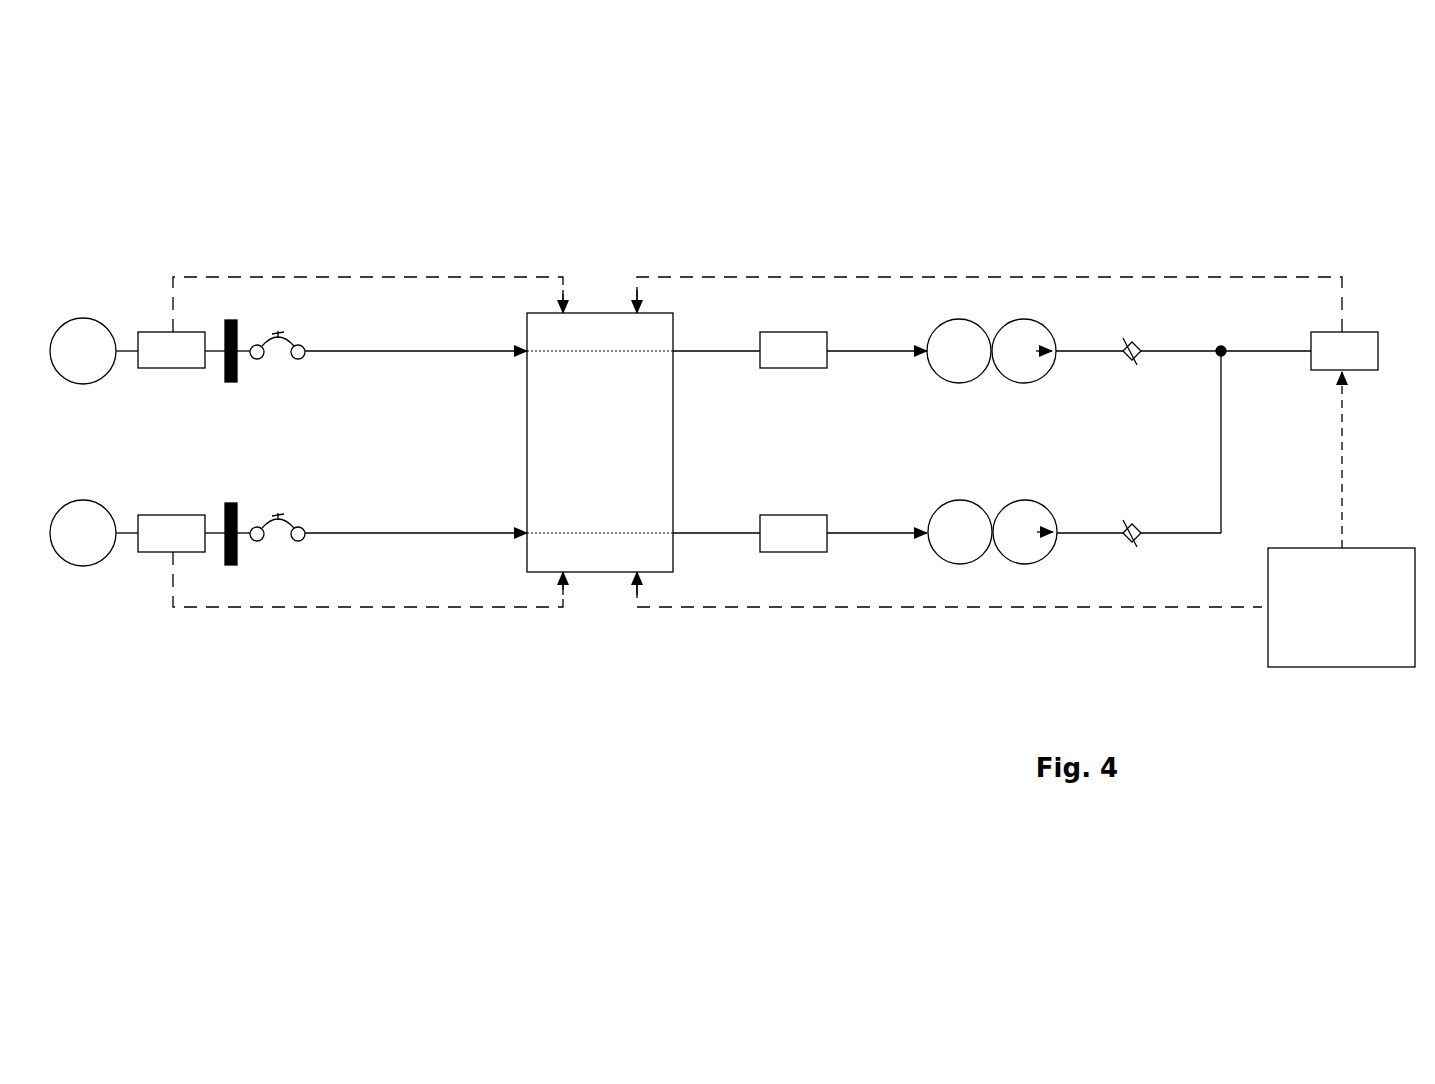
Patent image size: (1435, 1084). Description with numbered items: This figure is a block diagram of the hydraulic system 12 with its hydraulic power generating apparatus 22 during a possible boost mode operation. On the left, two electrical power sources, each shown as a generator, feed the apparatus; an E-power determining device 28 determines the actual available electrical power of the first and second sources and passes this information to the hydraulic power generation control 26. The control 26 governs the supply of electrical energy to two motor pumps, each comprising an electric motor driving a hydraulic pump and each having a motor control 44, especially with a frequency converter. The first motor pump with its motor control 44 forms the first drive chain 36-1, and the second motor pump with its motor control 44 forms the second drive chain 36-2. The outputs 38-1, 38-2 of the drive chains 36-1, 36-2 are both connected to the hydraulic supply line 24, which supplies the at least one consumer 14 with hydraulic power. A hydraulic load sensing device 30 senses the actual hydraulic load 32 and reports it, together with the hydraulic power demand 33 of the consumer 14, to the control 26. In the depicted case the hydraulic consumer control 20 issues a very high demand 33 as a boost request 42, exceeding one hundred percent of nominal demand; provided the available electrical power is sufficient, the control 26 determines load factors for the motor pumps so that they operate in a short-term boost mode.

The hydraulic system 12 is at (1186, 715).
The consumer 14 is at (1360, 372).
The hydraulic consumer control 20 is at (1341, 607).
The hydraulic power generating apparatus 22 is at (740, 683).
The hydraulic supply line 24 is at (1226, 439).
The hydraulic power generation control 26 is at (600, 442).
The E-power determining device 28 is at (321, 277).
The hydraulic load sensing device 30 is at (1027, 282).
The actual hydraulic load 32 is at (1185, 272).
The hydraulic power demand 33 is at (1344, 328).
The first drive chain 36-1 is at (811, 574).
The second drive chain 36-2 is at (874, 314).
The output of the first drive chain 38-1 is at (1098, 336).
The output of the second drive chain 38-2 is at (1099, 550).
The boost request 42 is at (972, 609).
The motor control 44 is at (800, 331).